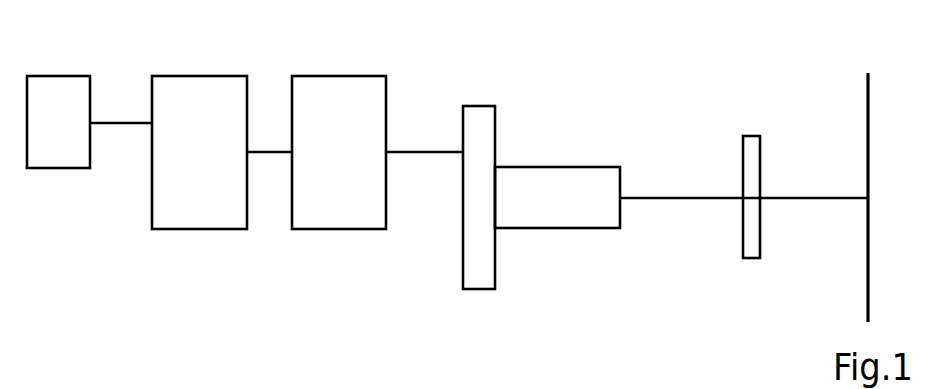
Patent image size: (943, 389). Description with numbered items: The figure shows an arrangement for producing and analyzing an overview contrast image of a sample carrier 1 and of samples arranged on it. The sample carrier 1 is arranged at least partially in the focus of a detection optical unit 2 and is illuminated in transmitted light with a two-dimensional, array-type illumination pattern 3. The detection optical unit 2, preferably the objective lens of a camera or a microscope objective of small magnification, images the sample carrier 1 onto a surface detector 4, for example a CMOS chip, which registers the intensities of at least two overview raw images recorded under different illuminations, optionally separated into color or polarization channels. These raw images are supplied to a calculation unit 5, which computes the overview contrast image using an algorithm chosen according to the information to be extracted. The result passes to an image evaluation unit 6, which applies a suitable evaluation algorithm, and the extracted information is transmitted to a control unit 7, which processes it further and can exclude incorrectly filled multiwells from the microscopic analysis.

The sample carrier 1 is at (753, 136).
The detection optical unit 2 is at (570, 167).
The illumination pattern 3 is at (866, 80).
The surface detector 4 is at (480, 106).
The calculation unit 5 is at (335, 82).
The image evaluation unit 6 is at (200, 76).
The control unit 7 is at (48, 83).